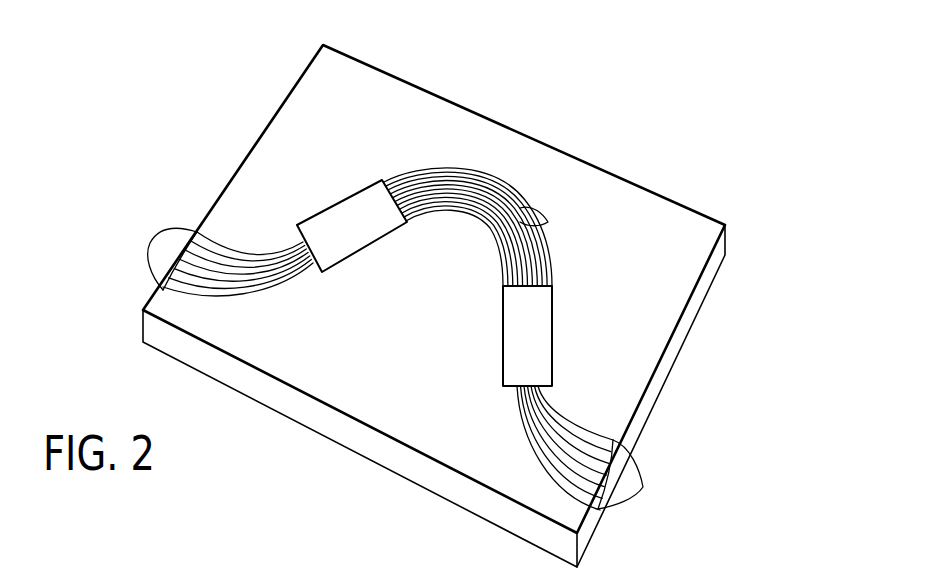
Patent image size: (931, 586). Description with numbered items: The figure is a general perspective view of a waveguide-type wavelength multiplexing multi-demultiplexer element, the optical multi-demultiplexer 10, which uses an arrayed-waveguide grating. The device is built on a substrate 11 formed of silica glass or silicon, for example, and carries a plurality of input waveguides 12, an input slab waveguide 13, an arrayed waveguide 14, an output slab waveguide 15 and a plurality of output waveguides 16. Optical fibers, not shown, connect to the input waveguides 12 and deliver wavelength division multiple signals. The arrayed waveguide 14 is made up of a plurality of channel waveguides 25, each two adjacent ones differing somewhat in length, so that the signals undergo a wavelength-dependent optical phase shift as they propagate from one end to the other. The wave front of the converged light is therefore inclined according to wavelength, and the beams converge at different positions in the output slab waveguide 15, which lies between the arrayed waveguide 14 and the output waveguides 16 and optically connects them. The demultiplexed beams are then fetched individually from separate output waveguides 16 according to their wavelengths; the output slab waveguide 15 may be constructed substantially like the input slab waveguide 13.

The optical multi-demultiplexer 10 is at (475, 306).
The substrate 11 is at (308, 407).
The input waveguides 12 is at (223, 253).
The input slab waveguide 13 is at (335, 218).
The arrayed waveguide 14 is at (523, 188).
The output slab waveguide 15 is at (547, 332).
The output waveguides 16 is at (649, 483).
The channel waveguides 25 is at (548, 222).